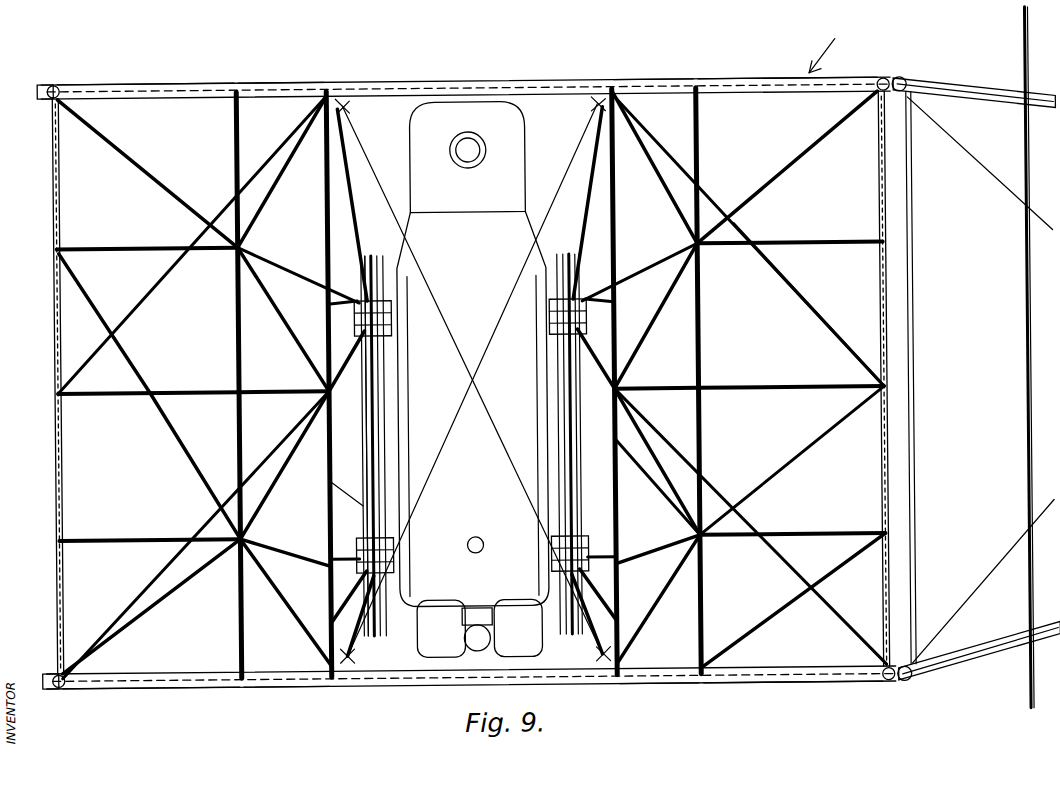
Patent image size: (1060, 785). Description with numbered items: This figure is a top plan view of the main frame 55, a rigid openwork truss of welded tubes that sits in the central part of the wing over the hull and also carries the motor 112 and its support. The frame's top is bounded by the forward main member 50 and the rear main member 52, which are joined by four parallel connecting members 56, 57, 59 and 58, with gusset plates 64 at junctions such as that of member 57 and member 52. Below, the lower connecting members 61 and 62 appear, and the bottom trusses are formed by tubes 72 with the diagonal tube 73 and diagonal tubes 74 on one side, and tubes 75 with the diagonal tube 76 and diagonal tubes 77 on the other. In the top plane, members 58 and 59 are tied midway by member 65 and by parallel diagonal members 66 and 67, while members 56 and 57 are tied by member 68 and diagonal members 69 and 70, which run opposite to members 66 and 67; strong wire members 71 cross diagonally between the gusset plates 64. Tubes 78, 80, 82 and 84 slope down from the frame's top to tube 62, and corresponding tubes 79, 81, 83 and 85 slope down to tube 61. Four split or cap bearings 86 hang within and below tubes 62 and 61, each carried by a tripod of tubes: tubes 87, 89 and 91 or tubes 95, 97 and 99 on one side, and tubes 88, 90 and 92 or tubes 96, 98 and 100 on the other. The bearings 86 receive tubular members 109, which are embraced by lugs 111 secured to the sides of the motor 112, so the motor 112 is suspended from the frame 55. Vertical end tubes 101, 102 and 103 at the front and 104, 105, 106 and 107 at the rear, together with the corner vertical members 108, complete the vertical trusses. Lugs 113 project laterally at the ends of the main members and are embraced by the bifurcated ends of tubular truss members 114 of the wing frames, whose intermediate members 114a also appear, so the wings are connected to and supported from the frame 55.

The main member 50 is at (355, 688).
The main member 52 is at (450, 82).
The main frame 55 is at (831, 48).
The connecting member 56 is at (54, 334).
The connecting member 57 is at (334, 302).
The connecting member 58 is at (890, 314).
The connecting member 59 is at (604, 306).
The connecting member 61 is at (700, 347).
The connecting member 62 is at (226, 393).
The gusset plate 64 is at (590, 660).
The member 65 is at (820, 392).
The diagonal member 66 is at (776, 276).
The diagonal member 67 is at (736, 518).
The member 68 is at (92, 393).
The diagonal member 69 is at (178, 272).
The diagonal member 70 is at (206, 520).
The wire member 71 is at (500, 310).
The tube 72 is at (94, 246).
The diagonal tube 73 is at (128, 358).
The diagonal tube 74 is at (142, 158).
The tube 75 is at (806, 243).
The diagonal tube 76 is at (774, 436).
The diagonal tube 77 is at (806, 152).
The tube 78 is at (278, 188).
The tube 79 is at (668, 192).
The tube 80 is at (290, 336).
The tube 81 is at (640, 338).
The tube 82 is at (280, 460).
The member 83 is at (648, 478).
The tube 84 is at (284, 598).
The tube 85 is at (650, 612).
The split or cap bearing 86 is at (392, 305).
The tube 87 is at (356, 195).
The tube 88 is at (588, 226).
The tube 89 is at (356, 338).
The tube 90 is at (600, 326).
The tube 91 is at (266, 260).
The brace 92 is at (636, 262).
The tube 95 is at (360, 496).
The tube 96 is at (606, 456).
The tube 97 is at (282, 550).
The tube 98 is at (640, 552).
The tube 99 is at (348, 614).
The tube 100 is at (604, 610).
The tube 101 is at (133, 688).
The tube 102 is at (258, 688).
The tube 103 is at (636, 687).
The tube 104 is at (140, 75).
The tube 105 is at (270, 82).
The tube 106 is at (748, 80).
The tube 107 is at (648, 80).
The vertical member 108 is at (80, 76).
The tubular member 109 is at (520, 378).
The bearing or lug 111 is at (390, 350).
The motor 112 is at (418, 226).
The lug 113 is at (42, 86).
The tubular truss member 114 is at (972, 98).
The intermediate member 114a is at (916, 436).